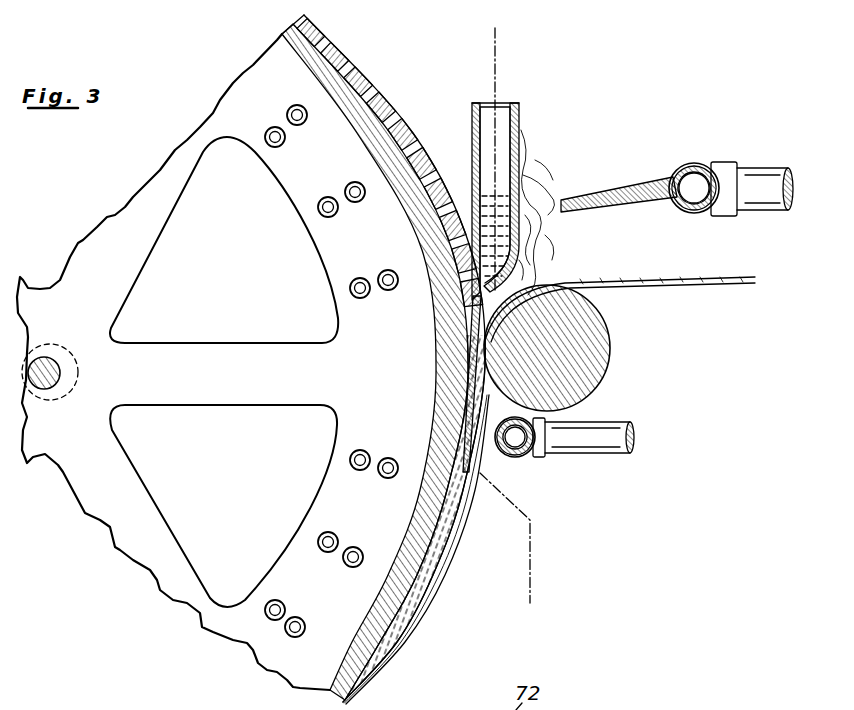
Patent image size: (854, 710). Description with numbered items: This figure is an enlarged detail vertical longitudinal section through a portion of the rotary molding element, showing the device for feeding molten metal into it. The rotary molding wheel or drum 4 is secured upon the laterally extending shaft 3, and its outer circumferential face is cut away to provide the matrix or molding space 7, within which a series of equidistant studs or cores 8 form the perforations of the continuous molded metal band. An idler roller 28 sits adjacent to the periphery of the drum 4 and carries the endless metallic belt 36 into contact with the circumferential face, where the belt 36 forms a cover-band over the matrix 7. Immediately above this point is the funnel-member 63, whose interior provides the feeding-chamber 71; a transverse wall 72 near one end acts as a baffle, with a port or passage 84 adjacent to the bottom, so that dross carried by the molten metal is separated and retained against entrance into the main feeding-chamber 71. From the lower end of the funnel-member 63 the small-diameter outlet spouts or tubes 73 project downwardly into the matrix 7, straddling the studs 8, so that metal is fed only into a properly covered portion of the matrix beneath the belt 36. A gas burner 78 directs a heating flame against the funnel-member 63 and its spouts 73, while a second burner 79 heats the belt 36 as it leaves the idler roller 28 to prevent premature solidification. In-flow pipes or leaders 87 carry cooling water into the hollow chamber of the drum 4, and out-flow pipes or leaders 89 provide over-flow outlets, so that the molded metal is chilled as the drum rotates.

The shaft 3 is at (60, 360).
The rotary molding wheel or drum 4 is at (337, 43).
The matrix or molding space 7 is at (353, 74).
The studs or cores 8 is at (388, 108).
The idler roller 28 is at (558, 365).
The endless metallic belt 36 is at (682, 282).
The funnel-member 63 is at (520, 132).
The feeding-chamber 71 is at (495, 176).
The transverse wall 72 is at (498, 122).
The outlet spouts or tubes 73 is at (468, 338).
The gas burner 78 is at (678, 173).
The gas burner 79 is at (528, 456).
The port or passage 84 is at (527, 254).
The in-flow pipes or leaders 87 is at (323, 197).
The out-flow pipes or leaders 89 is at (352, 182).